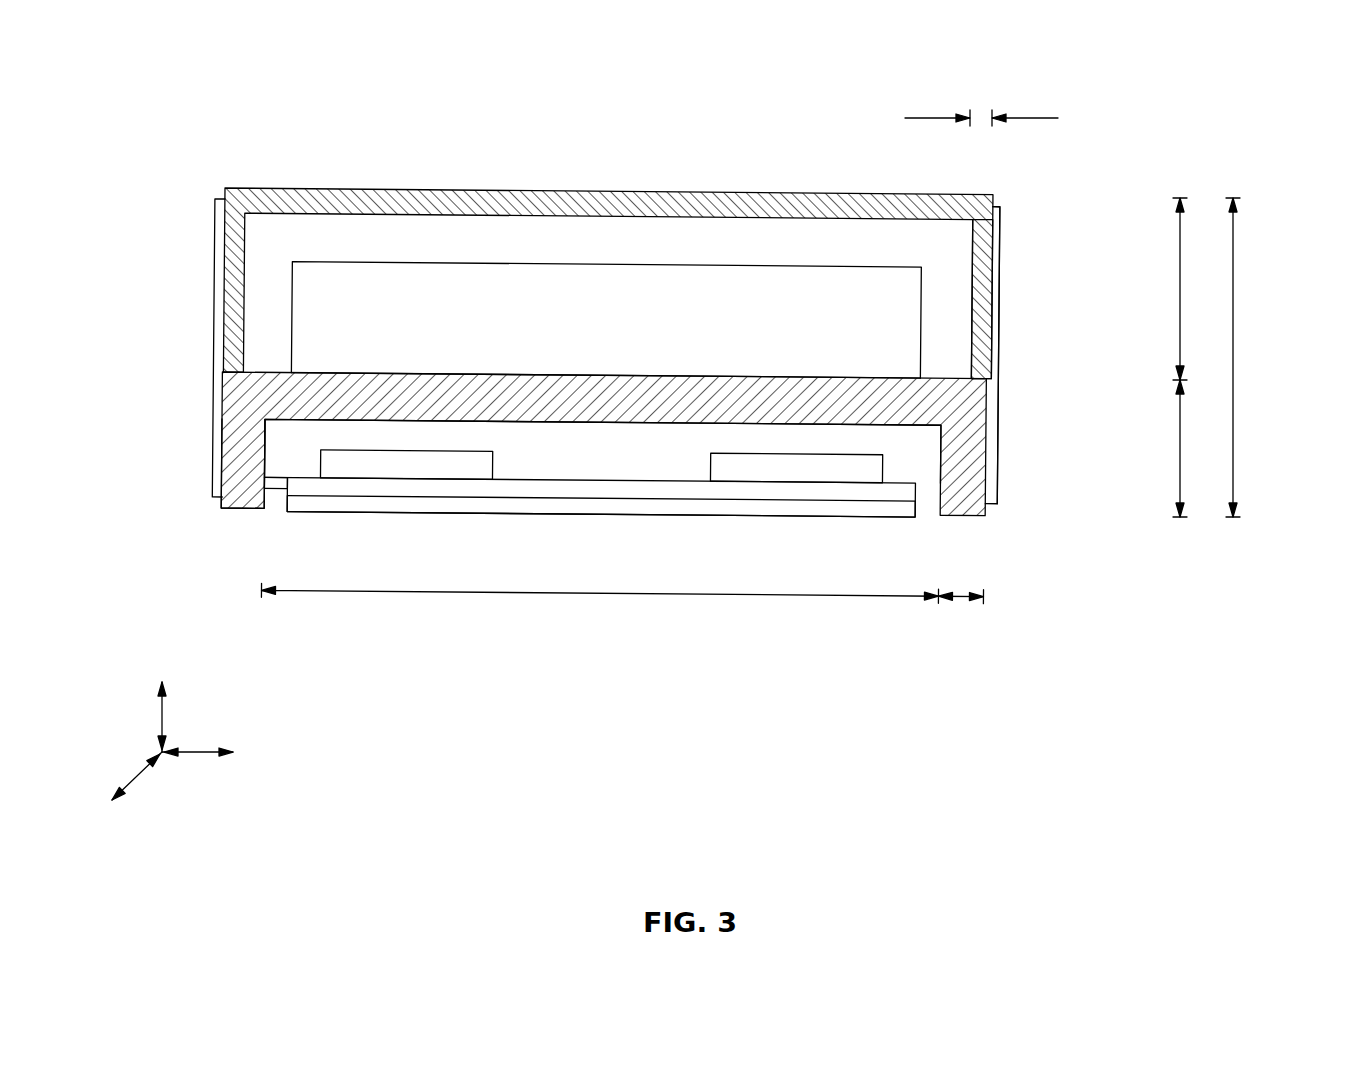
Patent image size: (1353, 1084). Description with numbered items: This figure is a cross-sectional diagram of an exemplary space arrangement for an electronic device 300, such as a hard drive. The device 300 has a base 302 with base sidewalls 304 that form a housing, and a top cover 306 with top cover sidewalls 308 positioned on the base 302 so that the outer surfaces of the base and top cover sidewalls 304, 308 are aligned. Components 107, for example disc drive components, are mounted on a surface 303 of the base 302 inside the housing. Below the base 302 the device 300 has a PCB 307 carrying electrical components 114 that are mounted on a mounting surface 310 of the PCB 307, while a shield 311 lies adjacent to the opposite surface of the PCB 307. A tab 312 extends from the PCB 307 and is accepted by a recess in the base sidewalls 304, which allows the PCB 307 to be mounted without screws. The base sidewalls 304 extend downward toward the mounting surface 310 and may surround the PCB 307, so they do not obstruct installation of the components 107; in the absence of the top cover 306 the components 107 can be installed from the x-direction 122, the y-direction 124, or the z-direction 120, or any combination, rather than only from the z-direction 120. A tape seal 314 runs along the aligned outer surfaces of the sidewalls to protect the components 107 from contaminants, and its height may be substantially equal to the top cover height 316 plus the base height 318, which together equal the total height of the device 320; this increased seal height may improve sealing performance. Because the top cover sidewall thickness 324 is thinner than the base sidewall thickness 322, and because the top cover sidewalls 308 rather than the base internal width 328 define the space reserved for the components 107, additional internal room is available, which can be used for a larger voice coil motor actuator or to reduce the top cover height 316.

The electronic device 300 is at (190, 125).
The top cover 306 is at (653, 191).
The top cover sidewalls 308 is at (985, 328).
The tape seal 314 is at (993, 287).
The base 302 is at (447, 376).
The base sidewalls 304 is at (232, 450).
The surface 303 is at (757, 379).
The components 107 is at (702, 338).
The mounting surface 310 is at (298, 476).
The electrical components 114 is at (483, 470).
The PCB 307 is at (848, 494).
The shield 311 is at (747, 508).
The tab 312 is at (272, 483).
The base internal width 328 is at (580, 596).
The base sidewall thickness 322 is at (957, 600).
The top cover height 316 is at (1177, 265).
The base height 318 is at (1177, 437).
The total height of the device 320 is at (1233, 353).
The top cover sidewall thickness 324 is at (980, 117).
The z-direction 120 is at (163, 645).
The x-direction 122 is at (263, 753).
The y-direction 124 is at (108, 840).